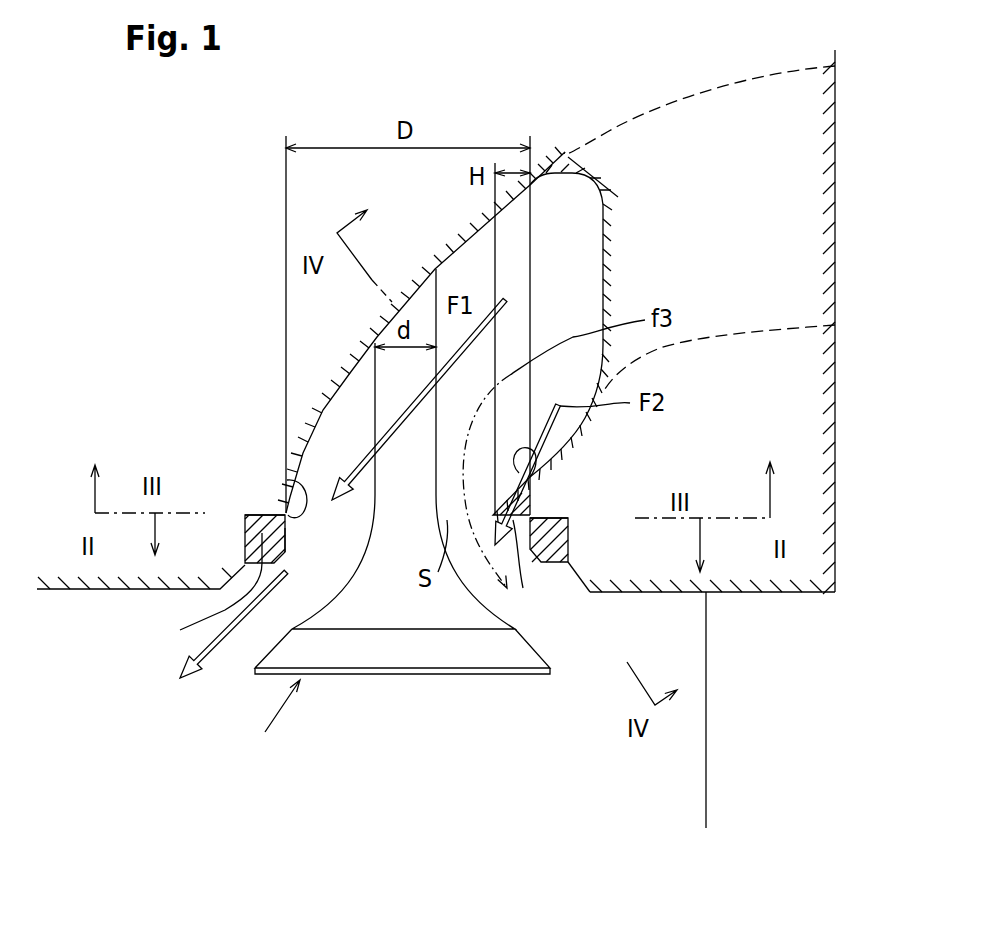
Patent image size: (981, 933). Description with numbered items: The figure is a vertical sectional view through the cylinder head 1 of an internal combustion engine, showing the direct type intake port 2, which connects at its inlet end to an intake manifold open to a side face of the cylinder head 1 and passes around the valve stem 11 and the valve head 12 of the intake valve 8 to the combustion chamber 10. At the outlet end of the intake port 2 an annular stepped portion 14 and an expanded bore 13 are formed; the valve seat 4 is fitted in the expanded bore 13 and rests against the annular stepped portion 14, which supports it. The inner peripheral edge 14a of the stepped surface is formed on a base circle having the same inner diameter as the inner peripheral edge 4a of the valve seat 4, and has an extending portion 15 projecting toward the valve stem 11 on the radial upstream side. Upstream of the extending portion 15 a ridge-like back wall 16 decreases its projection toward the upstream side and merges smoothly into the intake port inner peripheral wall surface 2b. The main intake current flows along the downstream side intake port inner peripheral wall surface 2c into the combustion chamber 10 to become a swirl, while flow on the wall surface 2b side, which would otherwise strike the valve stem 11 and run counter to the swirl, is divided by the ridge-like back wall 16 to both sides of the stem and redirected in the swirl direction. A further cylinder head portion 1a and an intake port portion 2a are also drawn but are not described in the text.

The cylinder head 1 is at (159, 374).
The lower surface of cylinder head 1a is at (75, 592).
The direct type intake port 2 is at (580, 287).
The port wall 2a is at (836, 228).
The intake port inner peripheral wall surface 2b is at (547, 488).
The radial downstream side intake port inner peripheral wall surface 2c is at (318, 420).
The valve seat 4 is at (597, 637).
The inner peripheral edge of the valve seat 4a is at (287, 528).
The intake valve 8 is at (256, 752).
The combustion chamber 10 is at (401, 746).
The valve stem 11 is at (393, 378).
The valve head 12 is at (445, 652).
The expanded bore 13 is at (245, 536).
The annular stepped portion 14 is at (250, 502).
The inner peripheral edge of the annular stepped surface 14a is at (287, 480).
The extending portion 15 is at (524, 569).
The ridge-like back wall 16 is at (548, 452).